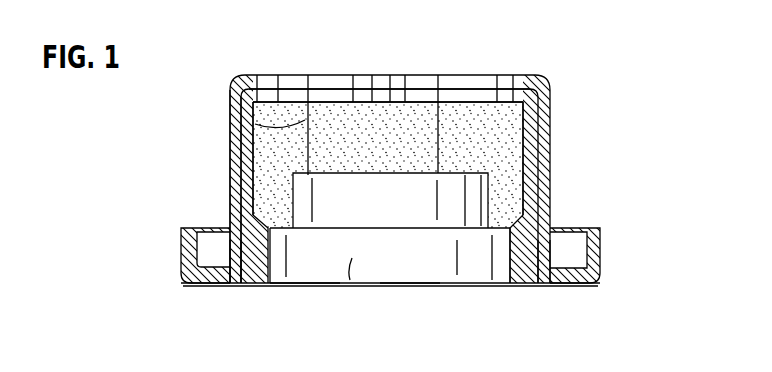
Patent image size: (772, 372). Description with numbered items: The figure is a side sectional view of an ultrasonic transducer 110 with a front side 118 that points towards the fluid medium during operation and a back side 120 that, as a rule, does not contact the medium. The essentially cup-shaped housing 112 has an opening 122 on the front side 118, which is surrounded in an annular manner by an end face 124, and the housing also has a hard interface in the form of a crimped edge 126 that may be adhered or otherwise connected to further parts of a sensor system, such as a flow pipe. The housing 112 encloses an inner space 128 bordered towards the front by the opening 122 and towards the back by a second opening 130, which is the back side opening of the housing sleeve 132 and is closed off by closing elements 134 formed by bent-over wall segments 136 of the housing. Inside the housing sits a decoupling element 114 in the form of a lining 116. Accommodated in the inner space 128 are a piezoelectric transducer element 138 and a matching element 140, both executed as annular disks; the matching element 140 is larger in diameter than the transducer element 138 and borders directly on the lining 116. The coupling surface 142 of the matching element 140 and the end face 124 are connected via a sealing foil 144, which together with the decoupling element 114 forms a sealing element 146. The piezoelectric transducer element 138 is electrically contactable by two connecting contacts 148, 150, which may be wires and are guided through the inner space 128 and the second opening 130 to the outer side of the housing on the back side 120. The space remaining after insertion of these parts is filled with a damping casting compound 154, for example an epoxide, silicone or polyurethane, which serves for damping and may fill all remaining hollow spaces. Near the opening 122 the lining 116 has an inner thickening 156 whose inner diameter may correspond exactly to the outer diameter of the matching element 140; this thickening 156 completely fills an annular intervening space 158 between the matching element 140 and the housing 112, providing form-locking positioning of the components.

The ultrasonic transducer 110 is at (575, 94).
The housing 112 is at (342, 141).
The decoupling element 114 is at (248, 148).
The lining 116 is at (164, 186).
The front side 118 is at (414, 296).
The back side 120 is at (285, 65).
The opening 122 is at (300, 297).
The end face 124 is at (548, 285).
The crimped edge 126 is at (600, 238).
The inner space 128 is at (515, 128).
The second opening 130 is at (336, 66).
The housing sleeve 132 is at (0, 0).
The closing elements 134 is at (439, 54).
The bent-over wall segments 136 is at (483, 80).
The piezoelectric transducer element 138 is at (325, 196).
The matching element 140 is at (349, 283).
The coupling surface 142 is at (470, 285).
The sealing foil 144 is at (237, 284).
The sealing element 146 is at (164, 186).
The connecting contact 148 is at (250, 120).
The connecting contact 150 is at (440, 118).
The damping casting compound 154 is at (512, 187).
The inner thickening 156 is at (258, 244).
The intervening space 158 is at (545, 248).